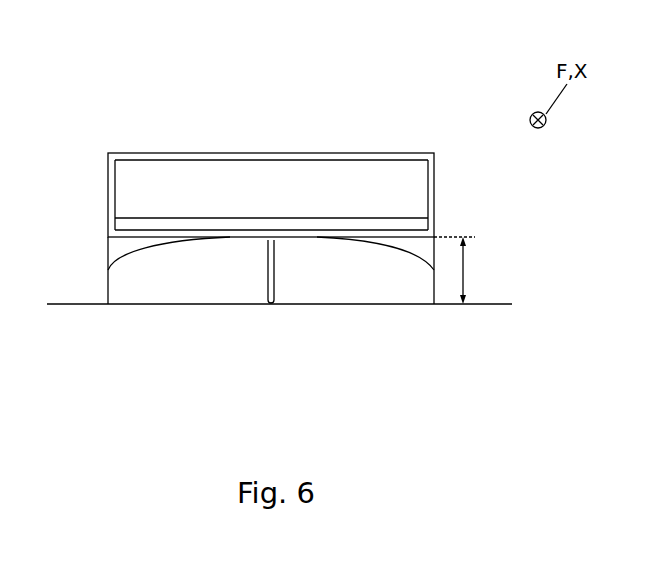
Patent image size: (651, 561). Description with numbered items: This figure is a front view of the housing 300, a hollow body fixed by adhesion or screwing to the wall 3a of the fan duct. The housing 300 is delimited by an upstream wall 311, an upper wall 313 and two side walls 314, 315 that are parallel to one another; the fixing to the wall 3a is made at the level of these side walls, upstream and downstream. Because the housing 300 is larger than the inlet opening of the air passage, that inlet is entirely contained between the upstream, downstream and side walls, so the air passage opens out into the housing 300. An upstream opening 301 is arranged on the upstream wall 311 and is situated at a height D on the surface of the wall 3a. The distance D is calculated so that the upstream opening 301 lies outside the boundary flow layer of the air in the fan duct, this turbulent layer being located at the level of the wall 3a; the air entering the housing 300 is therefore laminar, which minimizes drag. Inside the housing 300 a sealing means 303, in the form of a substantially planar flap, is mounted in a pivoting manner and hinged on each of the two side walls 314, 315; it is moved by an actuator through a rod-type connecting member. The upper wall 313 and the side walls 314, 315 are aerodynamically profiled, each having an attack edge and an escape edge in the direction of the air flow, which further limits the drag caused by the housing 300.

The housing 300 is at (293, 123).
The upstream opening 301 is at (297, 195).
The sealing means 303 is at (130, 217).
The upstream wall 311 is at (108, 270).
The upper wall 313 is at (177, 153).
The side wall 314 is at (108, 206).
The side wall 315 is at (436, 196).
The wall of the fan duct 3a is at (493, 304).
The height D is at (459, 270).